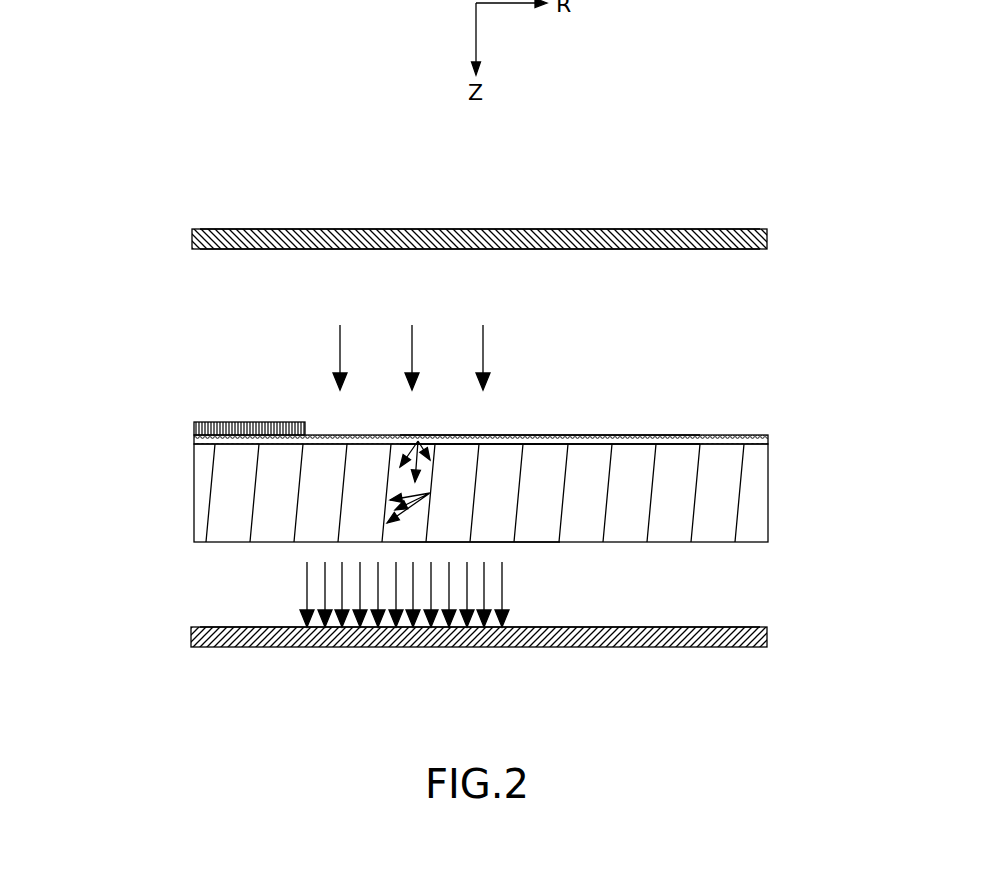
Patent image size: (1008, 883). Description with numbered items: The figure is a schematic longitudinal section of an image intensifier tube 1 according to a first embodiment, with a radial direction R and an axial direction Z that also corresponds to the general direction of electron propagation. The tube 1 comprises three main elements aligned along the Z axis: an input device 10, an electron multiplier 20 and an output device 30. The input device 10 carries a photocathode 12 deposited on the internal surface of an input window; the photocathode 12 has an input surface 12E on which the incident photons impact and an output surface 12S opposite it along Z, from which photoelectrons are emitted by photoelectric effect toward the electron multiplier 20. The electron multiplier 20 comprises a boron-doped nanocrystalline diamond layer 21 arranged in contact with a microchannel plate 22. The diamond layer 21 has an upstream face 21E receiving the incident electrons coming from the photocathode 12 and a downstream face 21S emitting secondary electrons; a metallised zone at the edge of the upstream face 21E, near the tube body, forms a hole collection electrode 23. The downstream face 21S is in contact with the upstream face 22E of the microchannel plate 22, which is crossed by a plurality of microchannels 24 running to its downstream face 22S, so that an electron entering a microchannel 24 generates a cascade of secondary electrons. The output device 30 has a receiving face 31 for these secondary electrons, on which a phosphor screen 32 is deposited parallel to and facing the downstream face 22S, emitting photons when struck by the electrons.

The image intensifier tube 1 is at (250, 100).
The input device 10 is at (140, 243).
The photocathode 12 is at (767, 241).
The input surface 12E is at (738, 230).
The output surface 12S is at (740, 249).
The electron multiplier 20 is at (140, 492).
The nanocrystalline diamond layer 21 is at (768, 438).
The upstream face 21E is at (700, 435).
The downstream face 21S is at (714, 444).
The microchannel plate 22 is at (762, 493).
The upstream face 22E is at (588, 444).
The downstream face 22S is at (660, 542).
The collection electrode 23 is at (203, 428).
The microchannels 24 is at (533, 453).
The output device 30 is at (140, 638).
The receiving face 31 is at (740, 627).
The phosphor screen 32 is at (767, 640).